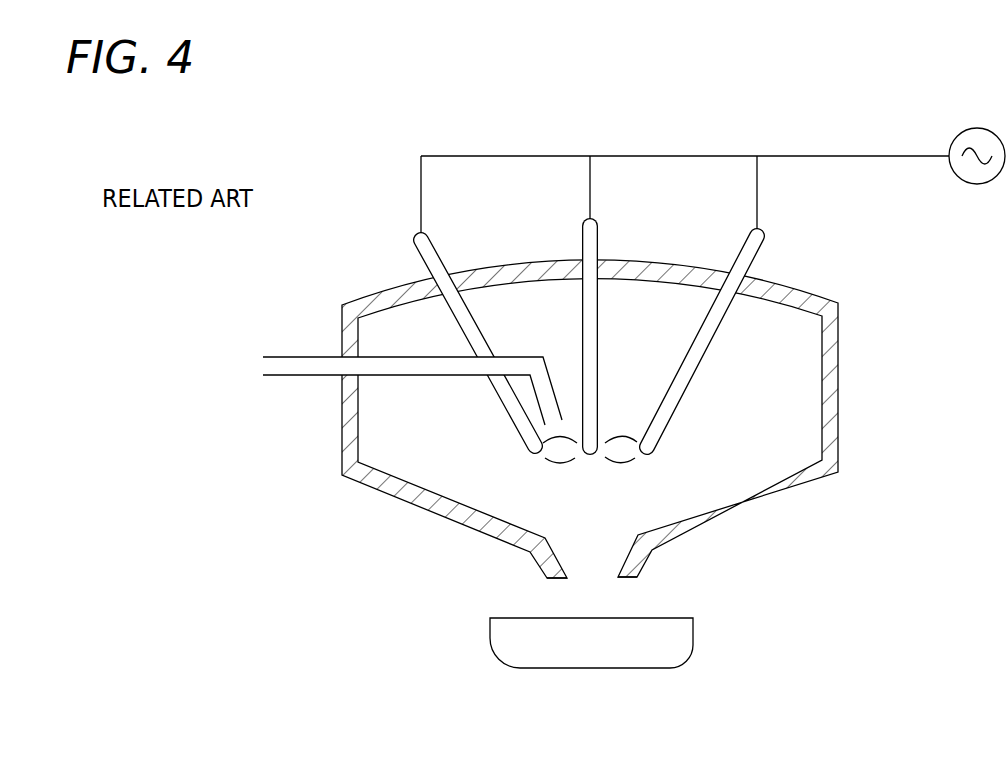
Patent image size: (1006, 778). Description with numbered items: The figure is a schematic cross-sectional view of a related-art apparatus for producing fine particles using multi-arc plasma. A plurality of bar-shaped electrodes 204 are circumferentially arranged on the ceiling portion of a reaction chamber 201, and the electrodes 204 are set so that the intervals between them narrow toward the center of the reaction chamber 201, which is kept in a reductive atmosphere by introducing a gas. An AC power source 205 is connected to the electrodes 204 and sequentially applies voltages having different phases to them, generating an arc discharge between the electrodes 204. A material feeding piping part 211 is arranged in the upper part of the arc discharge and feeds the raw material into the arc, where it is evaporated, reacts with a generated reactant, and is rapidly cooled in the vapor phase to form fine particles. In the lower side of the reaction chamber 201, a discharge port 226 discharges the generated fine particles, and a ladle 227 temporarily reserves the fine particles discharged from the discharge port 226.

The reaction chamber 201 is at (831, 353).
The bar-shaped electrodes 204 is at (473, 325).
The AC power source 205 is at (977, 184).
The material feeding piping part 211 is at (313, 358).
The discharge port 226 is at (590, 567).
The ladle 227 is at (508, 630).